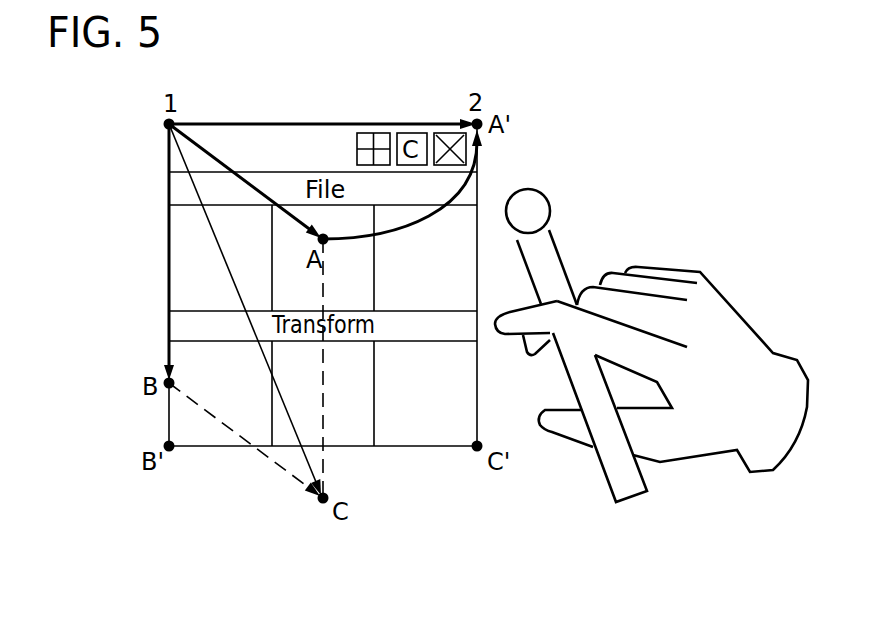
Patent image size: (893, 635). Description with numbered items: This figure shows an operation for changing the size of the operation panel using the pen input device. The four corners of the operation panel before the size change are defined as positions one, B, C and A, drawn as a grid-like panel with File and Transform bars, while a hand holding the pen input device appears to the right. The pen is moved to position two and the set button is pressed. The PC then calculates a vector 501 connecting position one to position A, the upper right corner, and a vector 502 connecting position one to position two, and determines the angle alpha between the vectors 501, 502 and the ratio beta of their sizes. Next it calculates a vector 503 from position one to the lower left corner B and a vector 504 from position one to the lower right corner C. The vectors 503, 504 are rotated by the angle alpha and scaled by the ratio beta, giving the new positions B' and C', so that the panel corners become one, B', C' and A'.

The vector 501 is at (266, 158).
The vector 502 is at (318, 124).
The vector 503 is at (169, 250).
The vector 504 is at (264, 358).